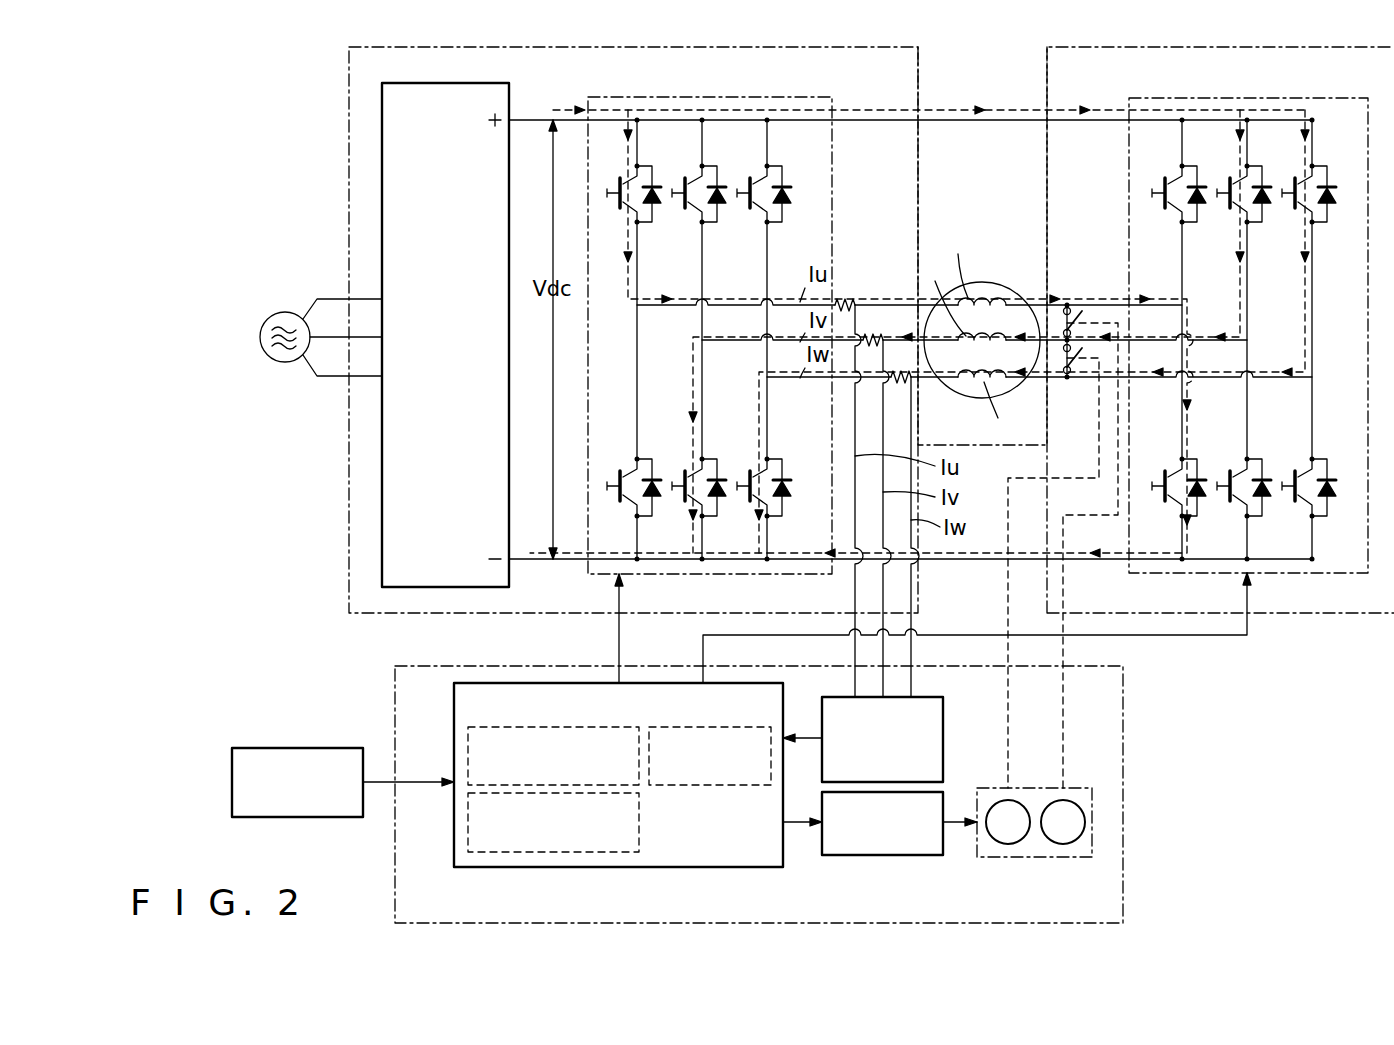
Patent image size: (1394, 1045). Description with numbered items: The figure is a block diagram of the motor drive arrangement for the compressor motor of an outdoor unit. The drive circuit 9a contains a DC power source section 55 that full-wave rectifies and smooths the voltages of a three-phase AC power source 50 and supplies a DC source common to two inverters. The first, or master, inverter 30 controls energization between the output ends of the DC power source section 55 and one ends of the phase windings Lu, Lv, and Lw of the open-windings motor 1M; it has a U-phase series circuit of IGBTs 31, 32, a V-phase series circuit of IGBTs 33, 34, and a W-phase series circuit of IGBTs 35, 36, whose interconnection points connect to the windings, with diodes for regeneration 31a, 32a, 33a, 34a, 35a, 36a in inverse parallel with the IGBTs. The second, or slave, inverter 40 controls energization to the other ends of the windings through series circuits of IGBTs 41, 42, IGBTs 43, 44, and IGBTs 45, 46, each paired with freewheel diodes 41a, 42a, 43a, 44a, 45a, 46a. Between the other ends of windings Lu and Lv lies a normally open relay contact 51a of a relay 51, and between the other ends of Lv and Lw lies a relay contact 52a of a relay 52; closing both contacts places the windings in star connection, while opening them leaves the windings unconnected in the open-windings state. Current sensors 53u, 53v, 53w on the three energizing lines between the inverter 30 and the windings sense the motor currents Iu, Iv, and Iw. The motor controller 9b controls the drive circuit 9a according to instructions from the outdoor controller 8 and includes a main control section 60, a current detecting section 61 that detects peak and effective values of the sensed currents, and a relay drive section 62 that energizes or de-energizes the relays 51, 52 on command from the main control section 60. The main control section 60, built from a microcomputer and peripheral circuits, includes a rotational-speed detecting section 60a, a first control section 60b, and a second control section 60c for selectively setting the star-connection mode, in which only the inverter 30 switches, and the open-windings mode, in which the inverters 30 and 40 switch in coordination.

The outdoor controller 8 is at (297, 748).
The drive circuit 9a is at (918, 76).
The motor controller 9b is at (1123, 770).
The motor 1M is at (988, 283).
The inverter 30 is at (730, 97).
The IGBT 31 is at (620, 183).
The IGBT 32 is at (620, 476).
The IGBT 33 is at (685, 183).
The IGBT 34 is at (685, 476).
The IGBT 35 is at (750, 183).
The IGBT 36 is at (750, 476).
The diode for regeneration 31a is at (655, 206).
The diode for regeneration 32a is at (655, 499).
The diode for regeneration 33a is at (720, 206).
The diode for regeneration 34a is at (720, 499).
The diode for regeneration 35a is at (785, 206).
The diode for regeneration 36a is at (785, 499).
The inverter 40 is at (1238, 98).
The IGBT 41 is at (1165, 183).
The IGBT 42 is at (1165, 476).
The IGBT 43 is at (1230, 183).
The IGBT 44 is at (1230, 476).
The IGBT 45 is at (1295, 183).
The IGBT 46 is at (1295, 476).
The diode for regeneration 41a is at (1200, 206).
The diode for regeneration 42a is at (1200, 499).
The diode for regeneration 43a is at (1265, 206).
The diode for regeneration 44a is at (1265, 499).
The diode for regeneration 45a is at (1330, 206).
The diode for regeneration 46a is at (1330, 499).
The three-phase AC power source 50 is at (285, 312).
The relay 51 is at (1072, 800).
The relay 52 is at (1016, 800).
The relay contact 51a is at (1077, 318).
The relay contact 52a is at (1074, 385).
The current sensor 53u is at (845, 298).
The current sensor 53v is at (875, 333).
The current sensor 53w is at (904, 384).
The DC power source section 55 is at (509, 95).
The main control section 60 is at (560, 683).
The rotational-speed detecting section 60a is at (482, 727).
The first control section 60b is at (750, 727).
The second control section 60c is at (552, 852).
The current detecting section 61 is at (943, 730).
The relay drive section 62 is at (943, 806).